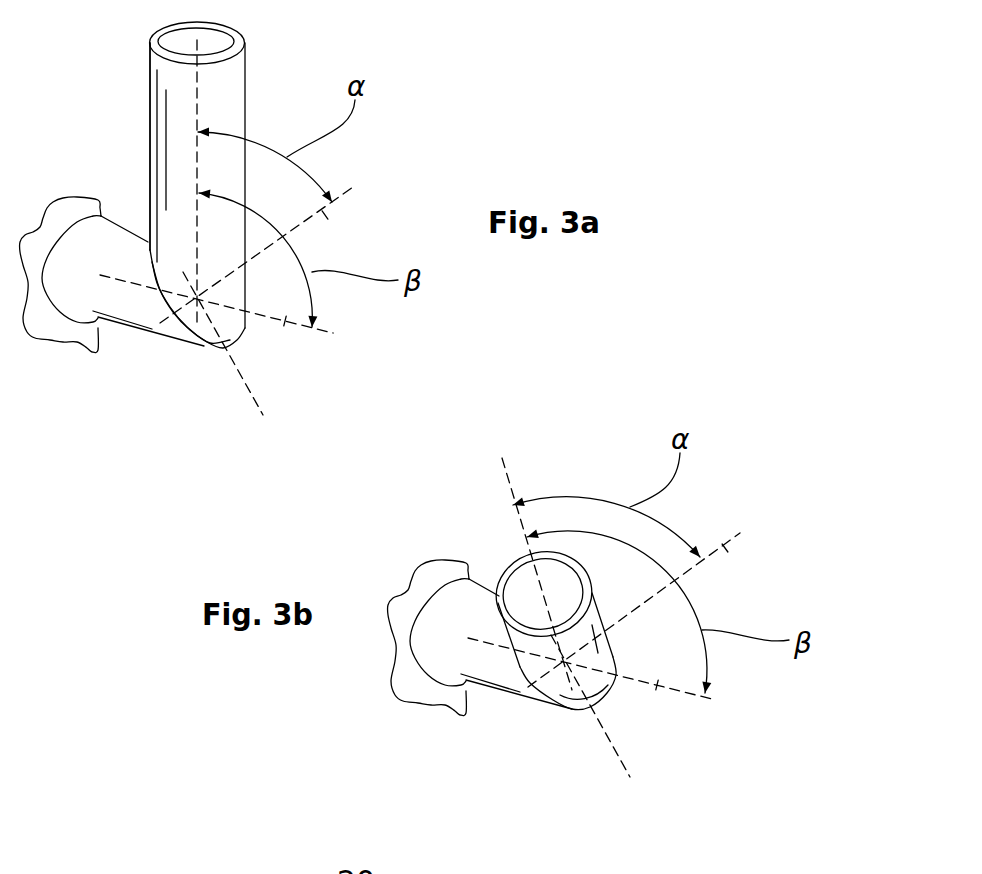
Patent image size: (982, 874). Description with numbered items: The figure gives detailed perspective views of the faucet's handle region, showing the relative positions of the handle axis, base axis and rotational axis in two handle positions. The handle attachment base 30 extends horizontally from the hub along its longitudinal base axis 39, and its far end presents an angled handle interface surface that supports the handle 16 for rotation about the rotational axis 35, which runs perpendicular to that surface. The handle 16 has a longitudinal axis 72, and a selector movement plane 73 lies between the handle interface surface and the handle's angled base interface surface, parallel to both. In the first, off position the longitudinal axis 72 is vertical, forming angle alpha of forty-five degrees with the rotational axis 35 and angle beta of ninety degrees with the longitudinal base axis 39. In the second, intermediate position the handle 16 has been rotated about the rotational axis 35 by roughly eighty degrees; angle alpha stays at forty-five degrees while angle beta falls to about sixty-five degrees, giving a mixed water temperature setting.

In FIG. 3A, the handle 16 is at (143, 108).
In FIG. 3B, the handle 16 is at (504, 563).
In FIG. 3A, the handle attachment base 30 is at (136, 338).
In FIG. 3B, the handle attachment base 30 is at (494, 704).
In FIG. 3A, the rotational axis 35 is at (345, 220).
In FIG. 3B, the rotational axis 35 is at (745, 557).
In FIG. 3A, the longitudinal base axis 39 is at (287, 338).
In FIG. 3B, the longitudinal base axis 39 is at (661, 704).
In FIG. 3A, the longitudinal axis of handle 72 is at (205, 88).
In FIG. 3B, the longitudinal axis of handle 72 is at (510, 467).
In FIG. 3A, the selector movement plane 73 is at (253, 402).
In FIG. 3B, the selector movement plane 73 is at (620, 764).